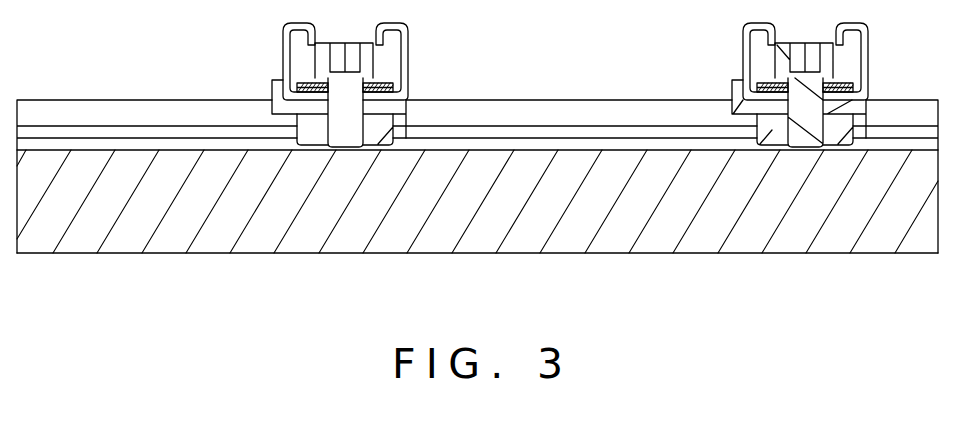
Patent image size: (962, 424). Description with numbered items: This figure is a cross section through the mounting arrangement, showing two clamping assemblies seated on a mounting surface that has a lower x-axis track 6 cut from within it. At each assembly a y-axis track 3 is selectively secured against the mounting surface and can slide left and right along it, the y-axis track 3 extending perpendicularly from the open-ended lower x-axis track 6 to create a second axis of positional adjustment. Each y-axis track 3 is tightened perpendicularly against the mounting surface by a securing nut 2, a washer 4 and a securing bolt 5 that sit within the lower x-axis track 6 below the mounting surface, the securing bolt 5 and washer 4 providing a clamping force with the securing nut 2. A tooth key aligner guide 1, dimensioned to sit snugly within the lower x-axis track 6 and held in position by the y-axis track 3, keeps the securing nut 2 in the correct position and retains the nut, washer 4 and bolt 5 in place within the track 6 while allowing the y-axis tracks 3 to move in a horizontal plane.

The tooth key aligner guide 1 is at (388, 110).
The securing nut 2 is at (313, 133).
The y-axis track 3 is at (402, 67).
The washer 4 is at (317, 92).
The securing bolt 5 is at (340, 62).
The lower x-axis track 6 is at (583, 205).